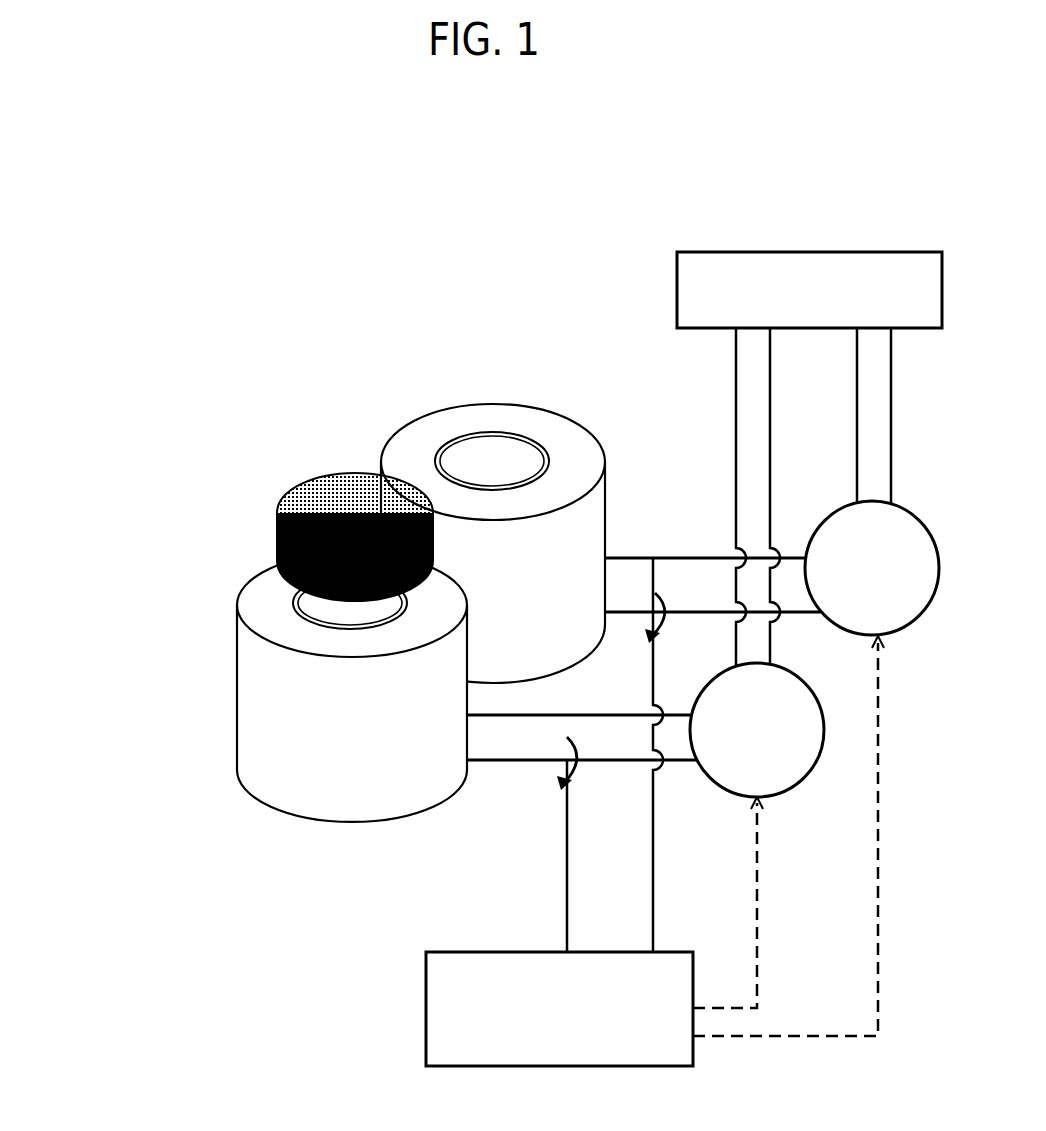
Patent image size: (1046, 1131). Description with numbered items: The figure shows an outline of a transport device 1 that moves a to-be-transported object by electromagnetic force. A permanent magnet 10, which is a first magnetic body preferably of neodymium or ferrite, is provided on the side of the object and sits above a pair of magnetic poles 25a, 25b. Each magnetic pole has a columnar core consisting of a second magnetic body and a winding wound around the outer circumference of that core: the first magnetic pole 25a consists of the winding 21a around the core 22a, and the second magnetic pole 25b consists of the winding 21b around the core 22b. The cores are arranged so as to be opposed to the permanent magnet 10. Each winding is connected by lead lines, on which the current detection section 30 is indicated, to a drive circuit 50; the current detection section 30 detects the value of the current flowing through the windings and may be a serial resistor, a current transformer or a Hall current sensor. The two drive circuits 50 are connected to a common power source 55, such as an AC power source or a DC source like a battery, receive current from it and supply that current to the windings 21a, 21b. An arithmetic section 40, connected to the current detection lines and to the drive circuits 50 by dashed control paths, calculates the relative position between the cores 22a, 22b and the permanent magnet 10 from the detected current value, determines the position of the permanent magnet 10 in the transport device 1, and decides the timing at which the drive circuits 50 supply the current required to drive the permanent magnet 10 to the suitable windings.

The transport device 1 is at (103, 396).
The permanent magnet 10 is at (312, 502).
The winding 21a is at (257, 595).
The core 22a is at (345, 613).
The magnetic pole 25a is at (108, 556).
The winding 21b is at (458, 428).
The core 22b is at (500, 453).
The magnetic pole 25b is at (537, 322).
The current detection section 30 is at (653, 558).
The arithmetic section 40 is at (445, 995).
The drive circuit 50 is at (905, 630).
The power source 55 is at (850, 257).